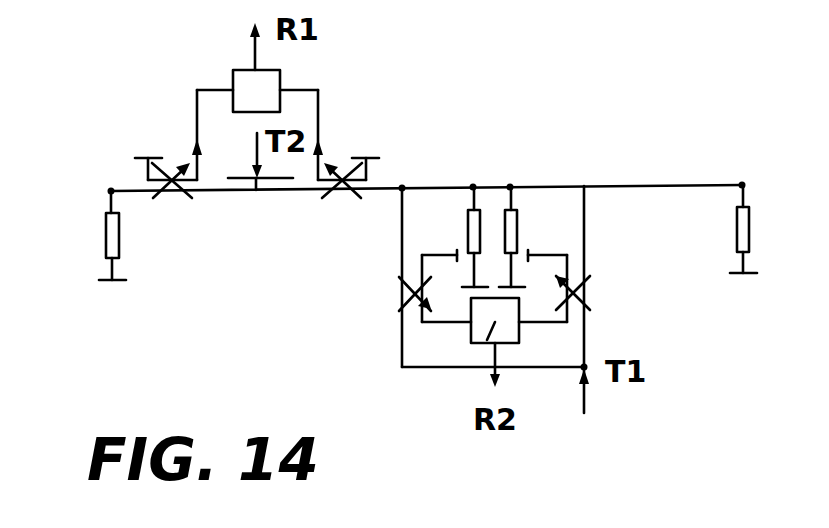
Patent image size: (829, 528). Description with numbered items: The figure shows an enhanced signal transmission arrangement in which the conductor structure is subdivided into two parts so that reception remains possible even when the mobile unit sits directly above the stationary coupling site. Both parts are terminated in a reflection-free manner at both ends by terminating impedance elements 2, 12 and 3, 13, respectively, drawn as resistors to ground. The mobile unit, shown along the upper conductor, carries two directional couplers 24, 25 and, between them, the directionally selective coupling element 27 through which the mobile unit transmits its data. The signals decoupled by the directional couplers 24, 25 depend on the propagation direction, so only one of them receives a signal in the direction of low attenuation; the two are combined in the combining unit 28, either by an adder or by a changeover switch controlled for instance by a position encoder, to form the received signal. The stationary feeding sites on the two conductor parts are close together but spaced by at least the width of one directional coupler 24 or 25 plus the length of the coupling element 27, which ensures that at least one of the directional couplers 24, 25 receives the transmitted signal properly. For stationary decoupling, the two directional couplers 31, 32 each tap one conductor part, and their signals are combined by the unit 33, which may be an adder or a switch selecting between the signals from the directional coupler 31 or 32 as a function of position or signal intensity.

The terminating impedance element 2 is at (106, 230).
The terminating impedance element 3 is at (749, 232).
The terminating impedance element 12 is at (468, 235).
The terminating impedance element 13 is at (550, 228).
The directional coupler 24 is at (171, 198).
The directional coupler 25 is at (358, 220).
The coupling element 27 is at (256, 191).
The combining unit 28 is at (233, 70).
The directional coupler 31 is at (410, 292).
The directional coupler 32 is at (585, 289).
The unit 33 is at (476, 343).